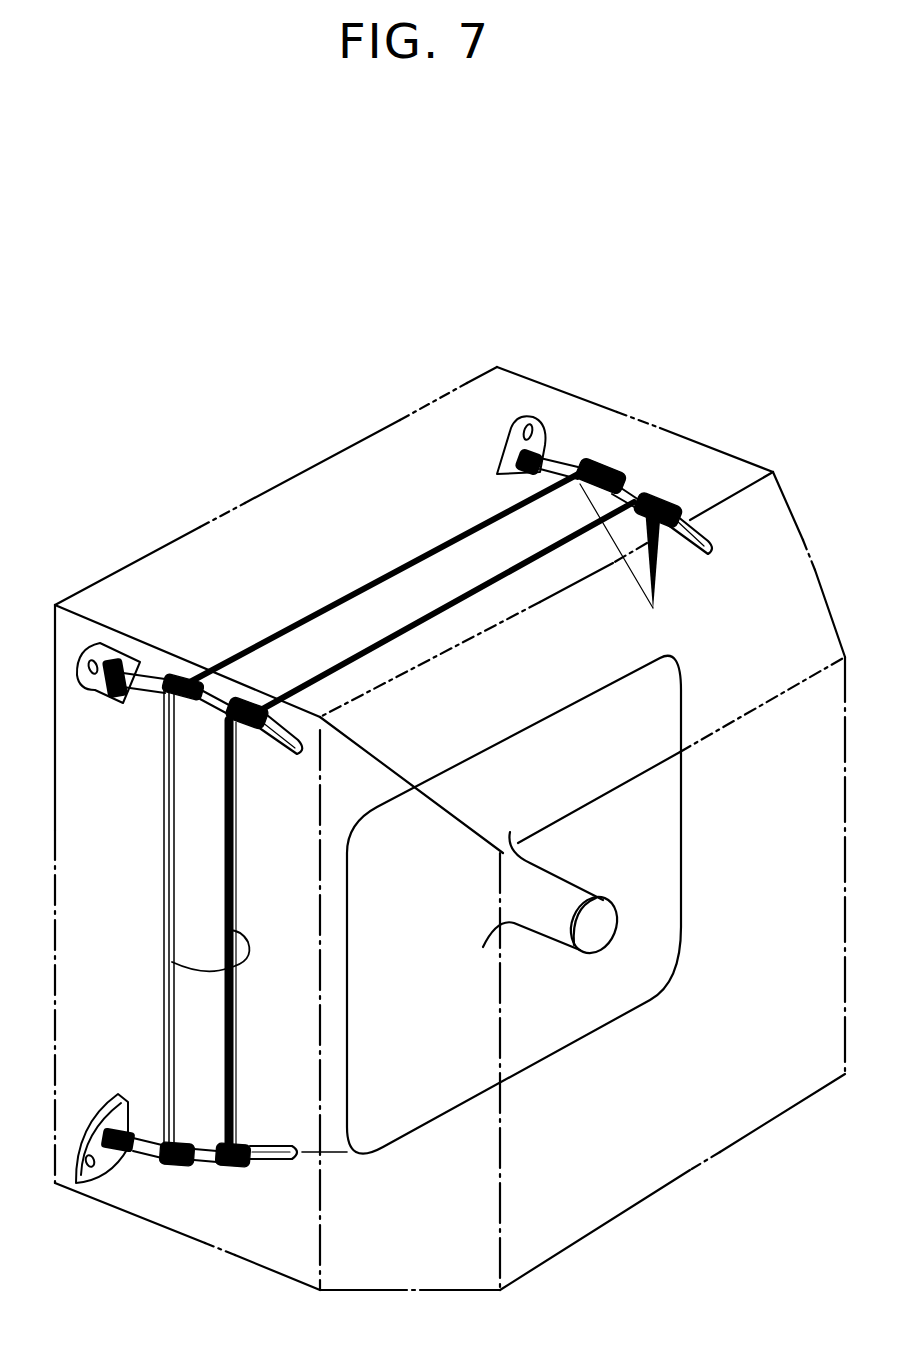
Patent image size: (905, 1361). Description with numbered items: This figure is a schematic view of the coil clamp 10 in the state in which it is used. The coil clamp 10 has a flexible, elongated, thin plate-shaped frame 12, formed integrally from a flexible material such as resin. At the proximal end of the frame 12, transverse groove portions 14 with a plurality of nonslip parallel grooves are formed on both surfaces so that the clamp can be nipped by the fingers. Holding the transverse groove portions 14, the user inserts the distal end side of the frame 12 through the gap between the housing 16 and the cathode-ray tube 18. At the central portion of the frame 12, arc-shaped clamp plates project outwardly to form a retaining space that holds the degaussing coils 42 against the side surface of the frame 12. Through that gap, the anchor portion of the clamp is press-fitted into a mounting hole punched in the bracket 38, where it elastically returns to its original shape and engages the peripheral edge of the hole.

The coil clamp 10 is at (652, 474).
The frame 12 is at (600, 498).
The transverse groove portions 14 is at (712, 538).
The housing 16 is at (705, 443).
The cathode-ray tube 18 is at (358, 568).
The bracket 38 is at (503, 448).
The degaussing coils 42 is at (228, 968).